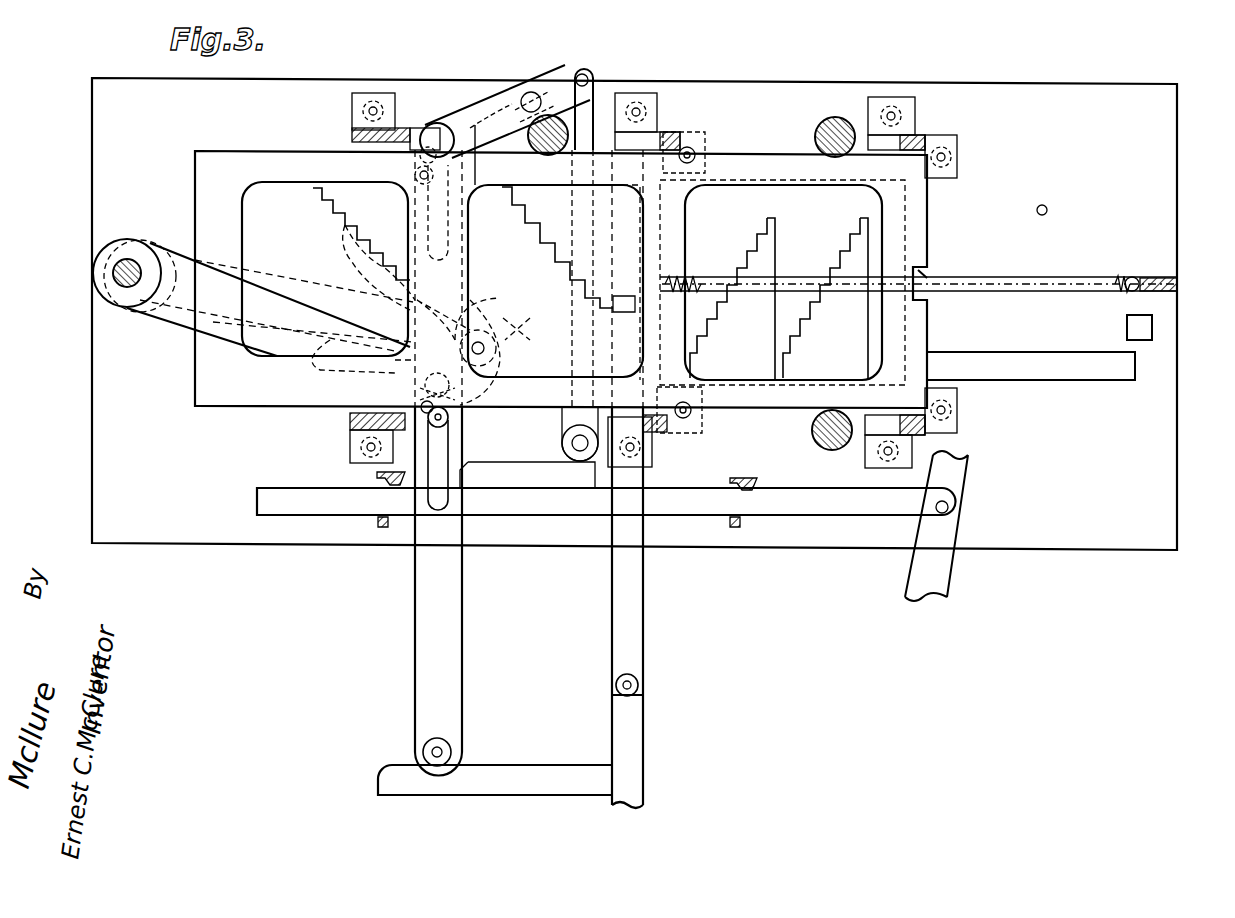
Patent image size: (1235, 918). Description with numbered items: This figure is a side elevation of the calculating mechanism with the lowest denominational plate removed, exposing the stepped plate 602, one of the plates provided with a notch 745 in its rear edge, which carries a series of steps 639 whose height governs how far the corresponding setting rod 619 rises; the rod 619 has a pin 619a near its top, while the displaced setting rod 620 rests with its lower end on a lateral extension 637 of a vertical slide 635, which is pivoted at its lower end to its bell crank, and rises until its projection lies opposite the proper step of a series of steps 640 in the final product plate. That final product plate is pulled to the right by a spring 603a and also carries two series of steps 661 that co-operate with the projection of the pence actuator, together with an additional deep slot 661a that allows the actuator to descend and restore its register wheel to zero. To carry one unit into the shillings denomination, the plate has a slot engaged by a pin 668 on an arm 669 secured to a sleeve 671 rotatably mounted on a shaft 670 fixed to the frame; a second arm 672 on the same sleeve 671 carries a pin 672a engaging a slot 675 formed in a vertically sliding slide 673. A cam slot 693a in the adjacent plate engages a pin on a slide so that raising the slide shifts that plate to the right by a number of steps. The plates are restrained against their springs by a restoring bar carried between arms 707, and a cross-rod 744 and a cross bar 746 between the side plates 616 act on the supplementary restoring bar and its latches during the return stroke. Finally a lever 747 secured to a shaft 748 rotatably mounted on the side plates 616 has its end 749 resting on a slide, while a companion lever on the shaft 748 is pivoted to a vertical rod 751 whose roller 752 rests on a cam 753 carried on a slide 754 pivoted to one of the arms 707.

The plate 602 is at (229, 396).
The spring 603a is at (1058, 288).
The side plate 616 is at (1097, 548).
The setting rod 619 is at (640, 655).
The pin 619a is at (655, 255).
The setting rod 620 is at (445, 650).
The vertical slide 635 is at (628, 748).
The lateral extension 637 is at (512, 723).
The steps 639 is at (528, 223).
The steps 640 is at (342, 223).
The series of steps 661 is at (848, 245).
The deep slot 661a is at (872, 330).
The pin 668 is at (458, 408).
The arm 669 is at (180, 340).
The shaft 670 is at (118, 287).
The sleeve 671 is at (100, 277).
The arm 672 is at (173, 247).
The pin 672a is at (515, 345).
The slide 673 is at (510, 352).
The slot 675 is at (340, 377).
The cam slot 693a is at (372, 264).
The arm 707 is at (957, 540).
The cross-rod 744 is at (1150, 328).
The notch 745 is at (918, 270).
The cross bar 746 is at (1047, 208).
The lever 747 is at (438, 125).
The shaft 748 is at (518, 130).
The end of lever 749 is at (500, 196).
The vertical rod 751 is at (587, 224).
The roller 752 is at (561, 444).
The cam 753 is at (505, 475).
The slide 754 is at (763, 520).